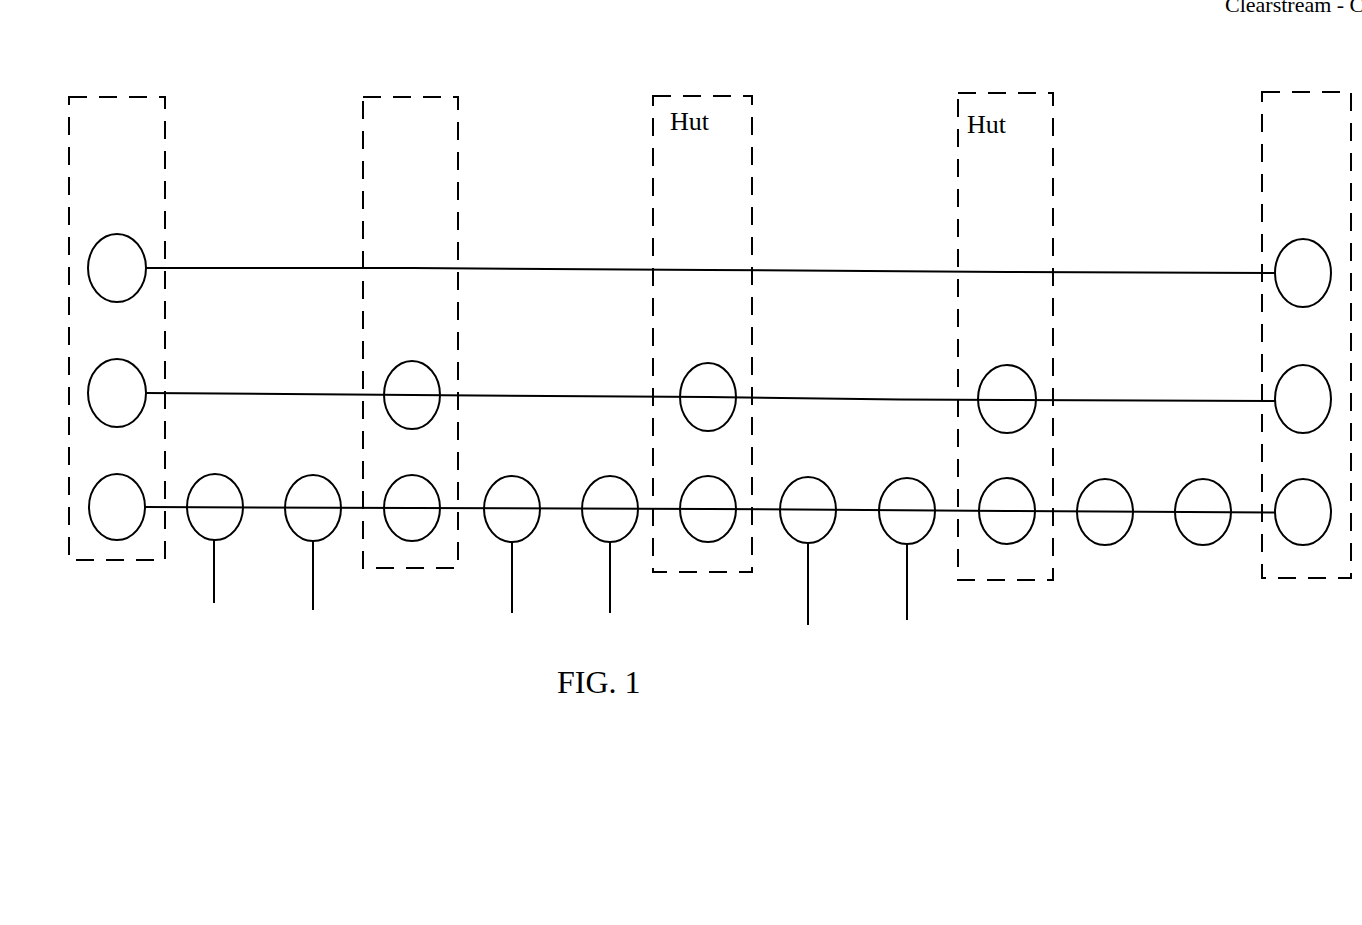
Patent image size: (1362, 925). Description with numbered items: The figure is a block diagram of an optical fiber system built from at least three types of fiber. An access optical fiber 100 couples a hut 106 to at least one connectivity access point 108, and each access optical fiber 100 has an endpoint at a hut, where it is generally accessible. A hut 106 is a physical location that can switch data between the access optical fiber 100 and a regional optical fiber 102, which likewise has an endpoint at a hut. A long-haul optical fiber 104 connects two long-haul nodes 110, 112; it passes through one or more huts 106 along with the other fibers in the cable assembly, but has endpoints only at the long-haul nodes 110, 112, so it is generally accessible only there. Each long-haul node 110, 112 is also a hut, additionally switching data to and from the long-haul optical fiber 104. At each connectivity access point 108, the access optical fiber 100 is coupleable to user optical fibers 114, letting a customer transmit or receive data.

The access optical fiber 100 is at (253, 500).
The regional optical fiber 102 is at (190, 392).
The long-haul optical fiber 104 is at (205, 263).
The hut 106 is at (418, 95).
The connectivity access point 108 is at (517, 470).
The long-haul node 110 is at (173, 120).
The long-haul node 112 is at (1260, 125).
The user optical fiber 114 is at (220, 582).